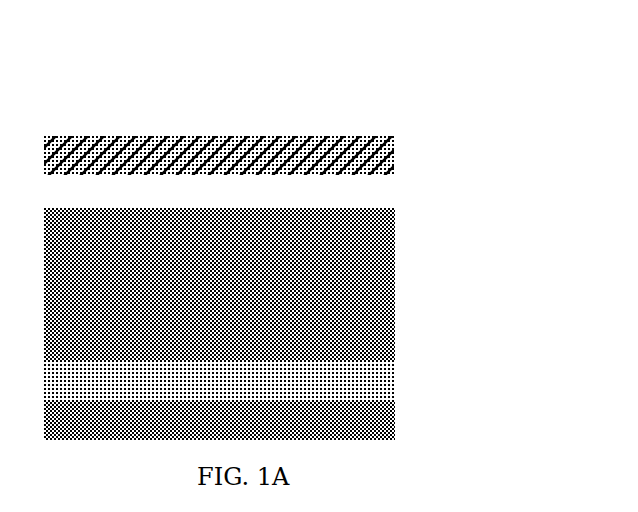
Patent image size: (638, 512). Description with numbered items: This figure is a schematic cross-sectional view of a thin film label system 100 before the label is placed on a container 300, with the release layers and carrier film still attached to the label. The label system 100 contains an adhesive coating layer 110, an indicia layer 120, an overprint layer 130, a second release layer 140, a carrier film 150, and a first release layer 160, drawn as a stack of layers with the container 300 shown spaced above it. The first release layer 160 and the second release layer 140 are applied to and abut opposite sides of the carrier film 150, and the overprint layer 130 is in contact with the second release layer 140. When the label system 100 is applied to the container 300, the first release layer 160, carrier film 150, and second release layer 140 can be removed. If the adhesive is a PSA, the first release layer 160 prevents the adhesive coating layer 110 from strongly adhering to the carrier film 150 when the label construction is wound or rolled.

The label system 100 is at (236, 105).
The container 300 is at (395, 157).
The adhesive coating layer 110 is at (395, 233).
The indicia layer 120 is at (395, 265).
The overprint layer 130 is at (395, 300).
The second release layer 140 is at (395, 343).
The carrier film 150 is at (395, 383).
The first release layer 160 is at (395, 420).